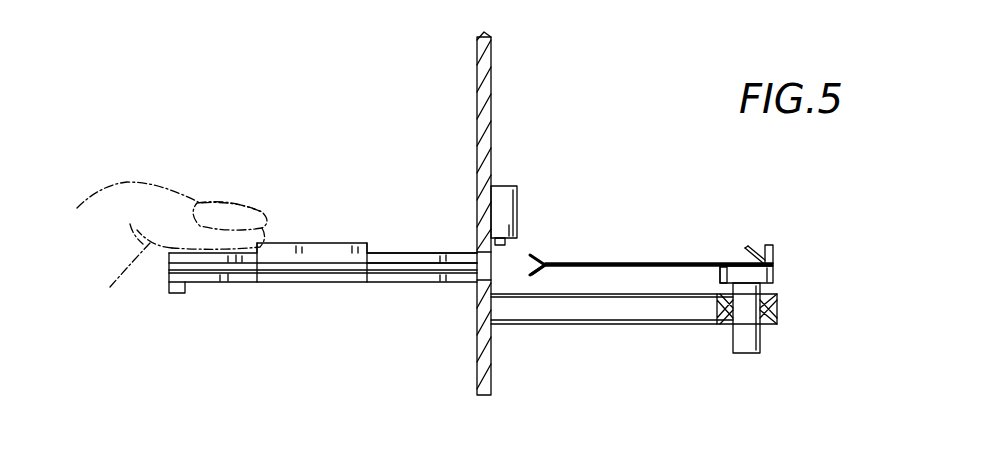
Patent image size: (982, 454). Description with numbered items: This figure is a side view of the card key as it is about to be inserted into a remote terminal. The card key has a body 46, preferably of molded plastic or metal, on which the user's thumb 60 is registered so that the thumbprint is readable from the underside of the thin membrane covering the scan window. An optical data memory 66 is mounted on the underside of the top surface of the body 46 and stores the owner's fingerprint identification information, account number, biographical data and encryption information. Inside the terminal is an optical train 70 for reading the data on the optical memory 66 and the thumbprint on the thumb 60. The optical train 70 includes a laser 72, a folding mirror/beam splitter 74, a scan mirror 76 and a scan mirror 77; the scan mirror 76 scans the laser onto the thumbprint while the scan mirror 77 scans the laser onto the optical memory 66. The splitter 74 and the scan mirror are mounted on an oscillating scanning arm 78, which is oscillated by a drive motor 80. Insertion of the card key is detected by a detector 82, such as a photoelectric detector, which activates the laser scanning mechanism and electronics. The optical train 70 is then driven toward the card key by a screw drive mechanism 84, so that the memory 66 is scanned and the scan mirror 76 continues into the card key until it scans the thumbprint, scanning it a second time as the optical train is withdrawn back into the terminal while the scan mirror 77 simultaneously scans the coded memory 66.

The body 46 is at (397, 283).
The thumb 60 is at (168, 192).
The optical data memory 66 is at (425, 253).
The optical train 70 is at (665, 213).
The laser 72 is at (747, 347).
The folding mirror/beam splitter 74 is at (748, 254).
The scan mirror 76 is at (538, 257).
The scan mirror 77 is at (543, 268).
The oscillating scanning arm 78 is at (592, 263).
The drive motor 80 is at (720, 277).
The detector 82 is at (503, 187).
The screw drive mechanism 84 is at (545, 316).